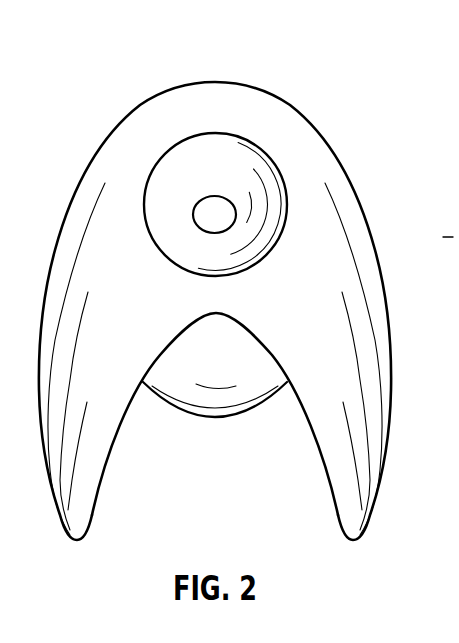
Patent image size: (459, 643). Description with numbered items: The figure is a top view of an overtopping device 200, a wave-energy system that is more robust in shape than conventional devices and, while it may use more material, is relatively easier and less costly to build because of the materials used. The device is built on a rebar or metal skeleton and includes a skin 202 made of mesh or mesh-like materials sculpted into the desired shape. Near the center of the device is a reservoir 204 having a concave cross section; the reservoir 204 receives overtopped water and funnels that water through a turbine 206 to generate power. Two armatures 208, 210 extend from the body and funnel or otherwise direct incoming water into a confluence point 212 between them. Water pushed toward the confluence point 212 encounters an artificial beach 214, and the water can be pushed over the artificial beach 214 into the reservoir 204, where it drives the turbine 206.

The overtopping device 200 is at (324, 79).
The skin 202 is at (135, 284).
The reservoir 204 is at (237, 176).
The turbine 206 is at (231, 202).
The armature 208 is at (145, 383).
The armature 210 is at (286, 387).
The confluence point 212 is at (219, 314).
The artificial beach 214 is at (232, 361).